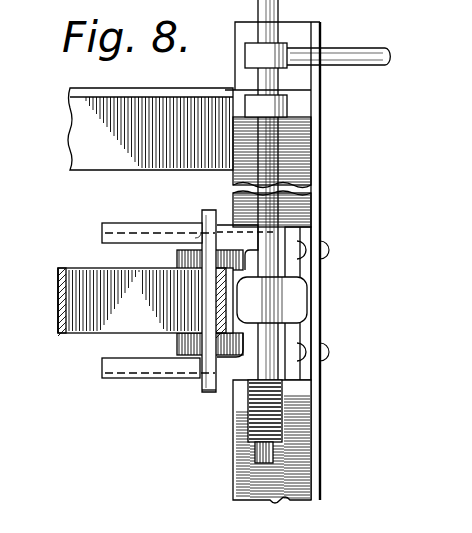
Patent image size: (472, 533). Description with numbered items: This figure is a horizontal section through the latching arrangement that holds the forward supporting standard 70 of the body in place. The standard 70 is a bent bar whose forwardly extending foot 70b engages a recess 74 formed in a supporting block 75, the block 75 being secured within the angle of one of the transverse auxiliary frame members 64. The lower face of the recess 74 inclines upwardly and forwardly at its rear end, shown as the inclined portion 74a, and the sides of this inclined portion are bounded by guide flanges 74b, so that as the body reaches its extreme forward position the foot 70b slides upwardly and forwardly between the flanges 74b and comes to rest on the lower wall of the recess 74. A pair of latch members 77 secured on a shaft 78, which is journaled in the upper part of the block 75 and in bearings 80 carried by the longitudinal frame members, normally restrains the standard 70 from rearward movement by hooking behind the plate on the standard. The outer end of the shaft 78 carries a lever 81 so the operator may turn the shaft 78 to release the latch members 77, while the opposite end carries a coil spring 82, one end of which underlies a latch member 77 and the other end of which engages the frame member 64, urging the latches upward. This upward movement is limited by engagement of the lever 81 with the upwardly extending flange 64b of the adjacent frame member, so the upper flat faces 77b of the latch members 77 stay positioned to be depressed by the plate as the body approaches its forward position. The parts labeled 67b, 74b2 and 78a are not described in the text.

The transverse auxiliary frame member 64 is at (285, 500).
The upwardly extending flange 64b is at (313, 173).
The block 67b is at (29, 300).
The standard 70 is at (86, 127).
The forwardly extending foot 70b is at (235, 296).
The recess 74 is at (207, 297).
The inclined portion 74a is at (183, 340).
The guide flanges 74b is at (230, 230).
The lower collar 74b2 is at (223, 381).
The supporting block 75 is at (303, 283).
The latch members 77 is at (140, 222).
The upper flat faces 77b is at (117, 233).
The shaft 78 is at (268, 153).
The bracket on shaft 78a is at (237, 285).
The bearings 80 is at (287, 107).
The lever 81 is at (366, 47).
The coil spring 82 is at (282, 412).